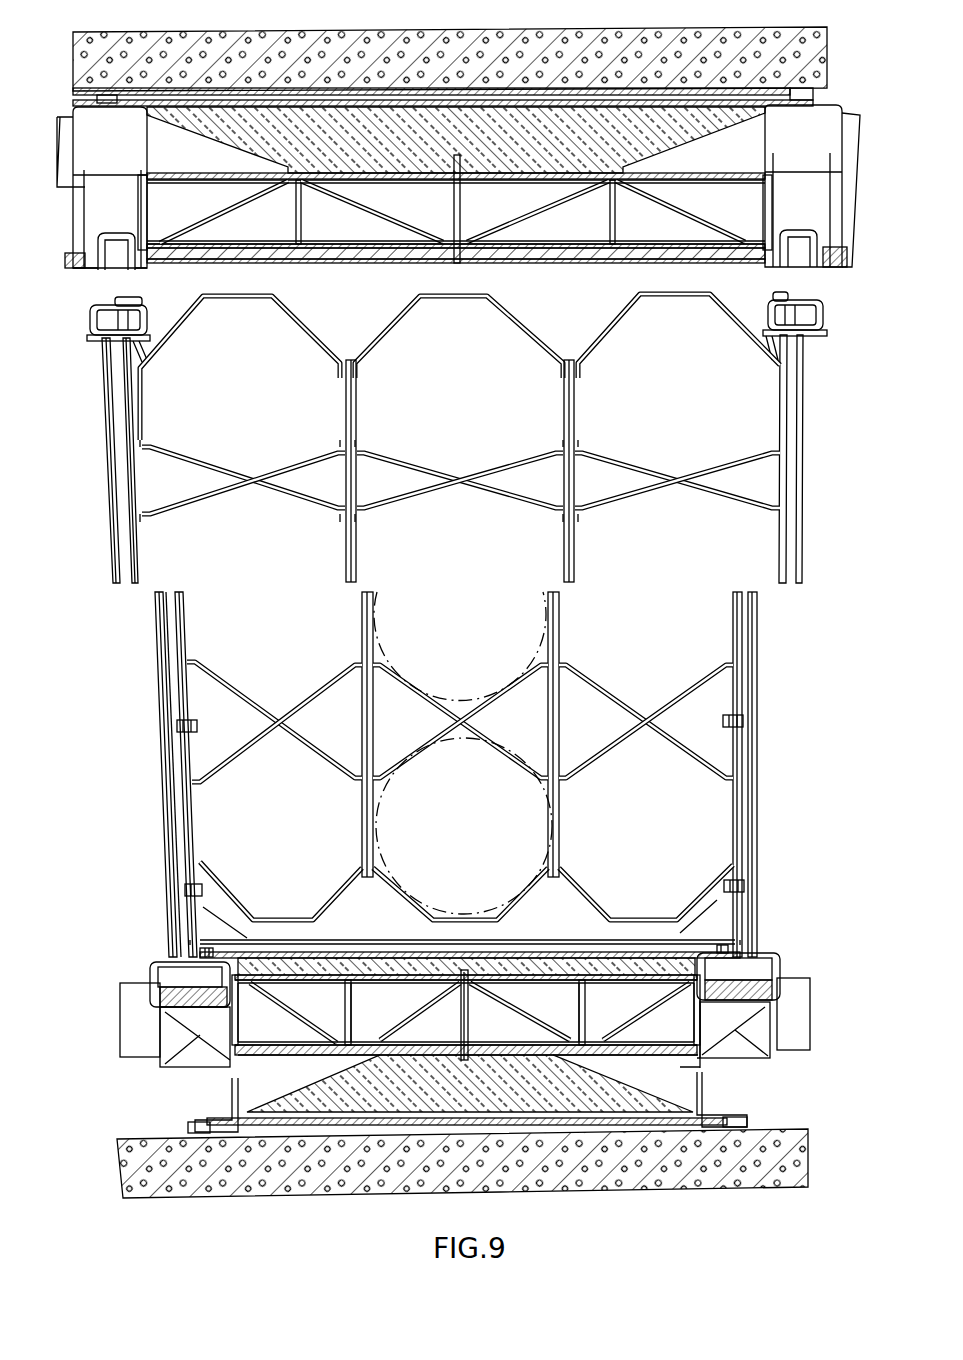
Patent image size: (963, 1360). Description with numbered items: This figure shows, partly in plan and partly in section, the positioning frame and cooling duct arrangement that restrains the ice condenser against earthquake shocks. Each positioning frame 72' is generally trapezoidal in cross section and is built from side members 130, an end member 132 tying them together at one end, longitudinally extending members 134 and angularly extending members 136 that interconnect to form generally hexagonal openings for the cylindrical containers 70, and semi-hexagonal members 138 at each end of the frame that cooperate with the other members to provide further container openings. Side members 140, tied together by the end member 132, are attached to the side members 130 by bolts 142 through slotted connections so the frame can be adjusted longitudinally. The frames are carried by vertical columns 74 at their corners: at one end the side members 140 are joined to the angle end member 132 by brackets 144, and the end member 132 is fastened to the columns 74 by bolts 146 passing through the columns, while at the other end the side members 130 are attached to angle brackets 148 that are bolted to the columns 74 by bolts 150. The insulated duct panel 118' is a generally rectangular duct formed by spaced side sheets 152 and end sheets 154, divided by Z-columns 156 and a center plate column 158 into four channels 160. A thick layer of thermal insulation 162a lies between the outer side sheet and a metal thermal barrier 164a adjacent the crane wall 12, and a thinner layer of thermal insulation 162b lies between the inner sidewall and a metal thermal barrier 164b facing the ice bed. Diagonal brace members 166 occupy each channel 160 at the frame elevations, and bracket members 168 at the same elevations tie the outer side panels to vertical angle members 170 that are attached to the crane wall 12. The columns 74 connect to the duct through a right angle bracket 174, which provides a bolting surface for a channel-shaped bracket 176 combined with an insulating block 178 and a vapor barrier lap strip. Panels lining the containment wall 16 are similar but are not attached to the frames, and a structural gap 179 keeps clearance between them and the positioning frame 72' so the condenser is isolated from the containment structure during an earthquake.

The containment wall 16 is at (456, 30).
The crane wall 12 is at (627, 1177).
The cylindrical container 70 is at (545, 624).
The positioning frame 72' is at (133, 768).
The vertical column 74 is at (92, 322).
The insulated duct panel 118' is at (458, 601).
The side member 130 is at (137, 553).
The end member 132 is at (502, 938).
The longitudinally extending member 134 is at (357, 405).
The angularly extending member 136 is at (497, 470).
The semi-hexagonal member 138 is at (240, 298).
The side member 140 is at (190, 845).
The bolt 142 is at (198, 727).
The bracket 144 is at (233, 933).
The bolt 146 is at (200, 952).
The angle bracket 148 is at (150, 337).
The bolt 150 is at (128, 298).
The side sheet 152 is at (520, 178).
The end sheet 154 is at (235, 1017).
The Z-column 156 is at (353, 1013).
The center plate column 158 is at (468, 1020).
The channel 160 is at (436, 205).
The thermal insulation layer 162a is at (628, 1093).
The thermal insulation layer 162b is at (303, 958).
The metal thermal barrier 164a is at (497, 1127).
The metal thermal barrier 164b is at (372, 958).
The brace member 166 is at (362, 200).
The bracket member 168 is at (683, 1068).
The angle member 170 is at (203, 1120).
The right angle bracket 174 is at (217, 1050).
The channel-shaped bracket 176 is at (170, 1007).
The insulating block 178 is at (170, 1002).
The structural gap 179 is at (150, 283).